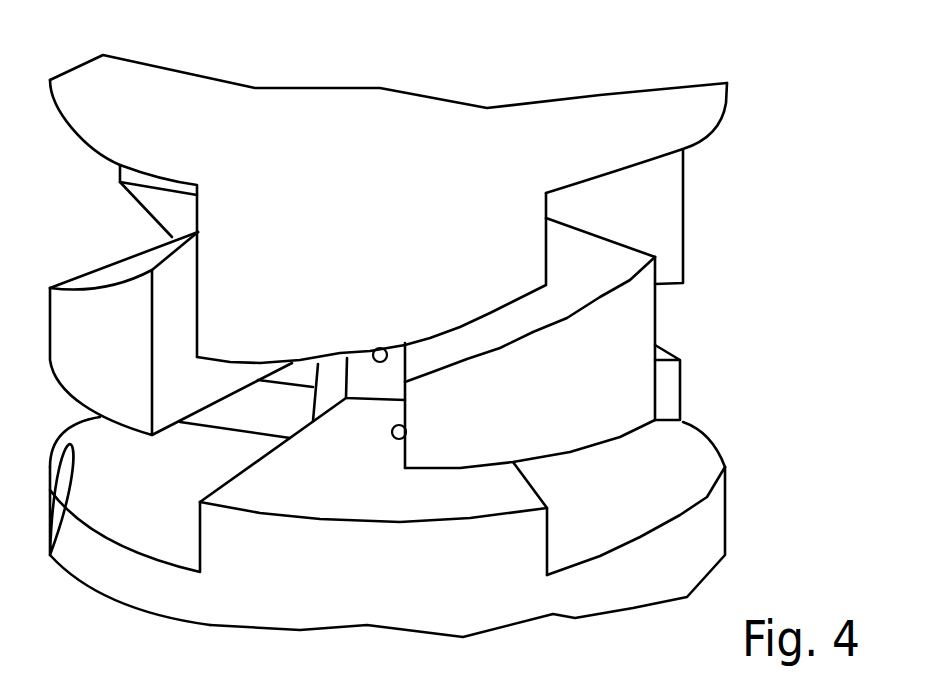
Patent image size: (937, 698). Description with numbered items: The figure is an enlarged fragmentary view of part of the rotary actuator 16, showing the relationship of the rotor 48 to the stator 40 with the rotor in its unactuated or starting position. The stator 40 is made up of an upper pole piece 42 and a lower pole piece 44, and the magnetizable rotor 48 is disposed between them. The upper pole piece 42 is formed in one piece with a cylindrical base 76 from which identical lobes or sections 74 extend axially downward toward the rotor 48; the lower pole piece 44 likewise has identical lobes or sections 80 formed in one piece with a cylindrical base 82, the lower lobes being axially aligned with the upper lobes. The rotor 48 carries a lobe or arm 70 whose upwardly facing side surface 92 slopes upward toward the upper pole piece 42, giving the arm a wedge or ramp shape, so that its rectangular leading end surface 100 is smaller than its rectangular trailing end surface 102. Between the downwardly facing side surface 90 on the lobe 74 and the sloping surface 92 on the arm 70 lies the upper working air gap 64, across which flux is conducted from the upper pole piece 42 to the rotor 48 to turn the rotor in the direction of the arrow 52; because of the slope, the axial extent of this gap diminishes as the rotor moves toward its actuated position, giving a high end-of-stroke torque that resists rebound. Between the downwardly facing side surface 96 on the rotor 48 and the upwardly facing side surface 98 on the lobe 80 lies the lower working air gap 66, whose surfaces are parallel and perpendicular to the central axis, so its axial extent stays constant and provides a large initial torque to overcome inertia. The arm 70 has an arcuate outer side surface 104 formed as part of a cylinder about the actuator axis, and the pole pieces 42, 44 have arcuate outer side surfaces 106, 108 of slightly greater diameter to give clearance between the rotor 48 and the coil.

The rotary actuator 16 is at (80, 68).
The stator 40 is at (100, 570).
The upper pole piece 42 is at (730, 102).
The lower pole piece 44 is at (715, 532).
The rotor 48 is at (660, 326).
The arrow 52 is at (630, 374).
The upper working air gap 64 is at (505, 335).
The lower working air gap 66 is at (478, 487).
The lobe or arm 70 is at (132, 320).
The lobe or section 74 is at (438, 280).
The cylindrical base 76 is at (588, 138).
The lobe or section 80 is at (668, 383).
The cylindrical base 82 is at (637, 580).
The downwardly facing side surface 90 is at (374, 349).
The upwardly facing side surface 92 is at (425, 363).
The downwardly facing side surface 96 is at (572, 455).
The upwardly facing side surface 98 is at (373, 503).
The leading end surface 100 is at (405, 441).
The trailing end surface 102 is at (655, 305).
The arcuate outer side surface 104 is at (520, 432).
The arcuate outer side surface 106 is at (283, 140).
The arcuate outer side surface 108 is at (232, 605).